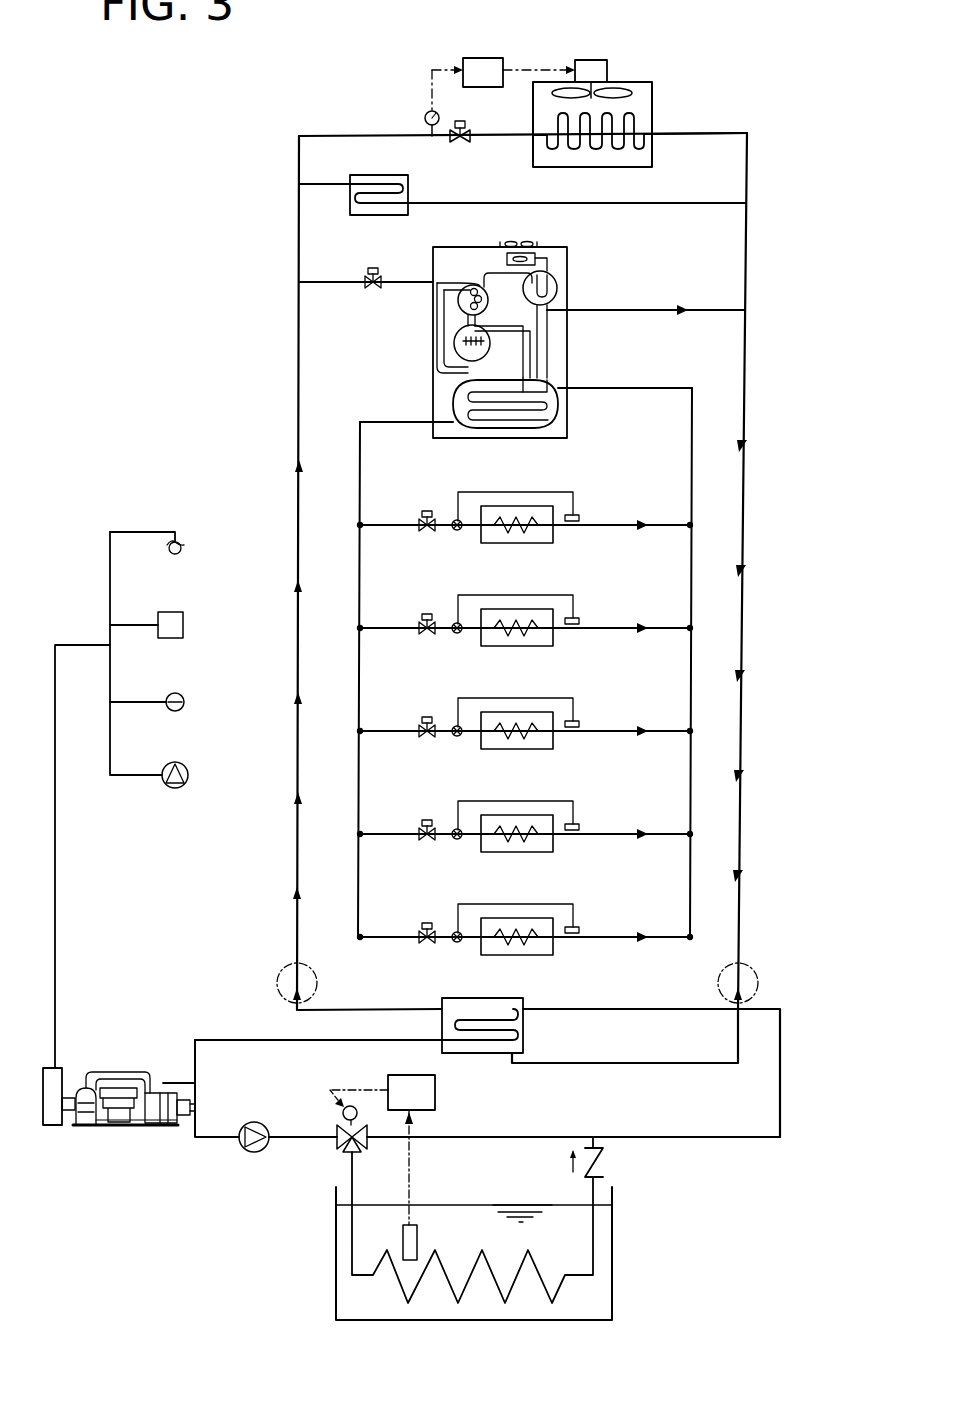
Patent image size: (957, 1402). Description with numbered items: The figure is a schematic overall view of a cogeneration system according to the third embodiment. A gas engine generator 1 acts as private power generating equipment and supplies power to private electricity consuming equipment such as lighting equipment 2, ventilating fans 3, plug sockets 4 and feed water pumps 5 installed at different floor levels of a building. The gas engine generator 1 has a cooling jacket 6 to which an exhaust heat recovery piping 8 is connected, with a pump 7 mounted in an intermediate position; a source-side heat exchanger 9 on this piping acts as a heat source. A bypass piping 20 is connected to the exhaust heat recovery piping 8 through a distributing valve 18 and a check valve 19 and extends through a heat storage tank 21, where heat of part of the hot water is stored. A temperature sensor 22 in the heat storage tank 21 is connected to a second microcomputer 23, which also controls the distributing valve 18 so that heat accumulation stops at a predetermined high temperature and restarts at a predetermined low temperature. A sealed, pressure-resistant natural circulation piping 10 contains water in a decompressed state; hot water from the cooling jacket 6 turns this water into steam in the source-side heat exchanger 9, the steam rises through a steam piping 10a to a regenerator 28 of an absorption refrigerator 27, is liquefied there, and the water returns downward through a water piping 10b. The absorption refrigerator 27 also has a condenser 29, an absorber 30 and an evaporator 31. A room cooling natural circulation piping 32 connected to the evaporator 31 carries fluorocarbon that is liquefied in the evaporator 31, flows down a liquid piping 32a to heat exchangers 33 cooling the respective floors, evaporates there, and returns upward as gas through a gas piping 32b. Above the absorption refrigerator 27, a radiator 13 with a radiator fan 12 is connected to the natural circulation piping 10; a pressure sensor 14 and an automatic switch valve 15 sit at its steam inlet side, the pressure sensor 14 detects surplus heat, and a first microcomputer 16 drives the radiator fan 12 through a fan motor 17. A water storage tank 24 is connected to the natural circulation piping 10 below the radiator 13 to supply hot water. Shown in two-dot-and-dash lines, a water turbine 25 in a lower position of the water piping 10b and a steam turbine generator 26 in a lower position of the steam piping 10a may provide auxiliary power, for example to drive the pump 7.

The gas engine generator 1 is at (127, 1052).
The lighting equipment 2 is at (184, 546).
The ventilating fans 3 is at (185, 627).
The plug sockets 4 is at (186, 702).
The feed water pumps 5 is at (190, 775).
The cooling jacket 6 is at (160, 1126).
The pump 7 is at (256, 1122).
The exhaust heat recovery piping 8 is at (225, 1138).
The source-side heat exchanger 9 is at (523, 1050).
The natural circulation piping 10 is at (752, 748).
The steam piping 10a is at (297, 838).
The water piping 10b is at (743, 847).
The radiator fan 12 is at (633, 93).
The radiator 13 is at (652, 153).
The pressure sensor 14 is at (425, 118).
The automatic switch valve 15 is at (462, 126).
The first microcomputer 16 is at (463, 66).
The fan motor 17 is at (607, 68).
The distributing valve 18 is at (345, 1153).
The check valve 19 is at (603, 1165).
The bypass piping 20 is at (353, 1183).
The heat storage tank 21 is at (612, 1252).
The temperature sensor 22 is at (418, 1240).
The second microcomputer 23 is at (435, 1096).
The water storage tank 24 is at (408, 190).
The water turbine 25 is at (755, 972).
The steam turbine generator 26 is at (282, 968).
The absorption refrigerator 27 is at (568, 350).
The regenerator 28 is at (437, 305).
The condenser 29 is at (557, 290).
The absorber 30 is at (454, 345).
The evaporator 31 is at (556, 418).
The room cooling natural circulation piping 32 is at (694, 458).
The liquid piping 32a is at (362, 510).
The gas piping 32b is at (692, 486).
The heat exchangers 33 is at (538, 543).